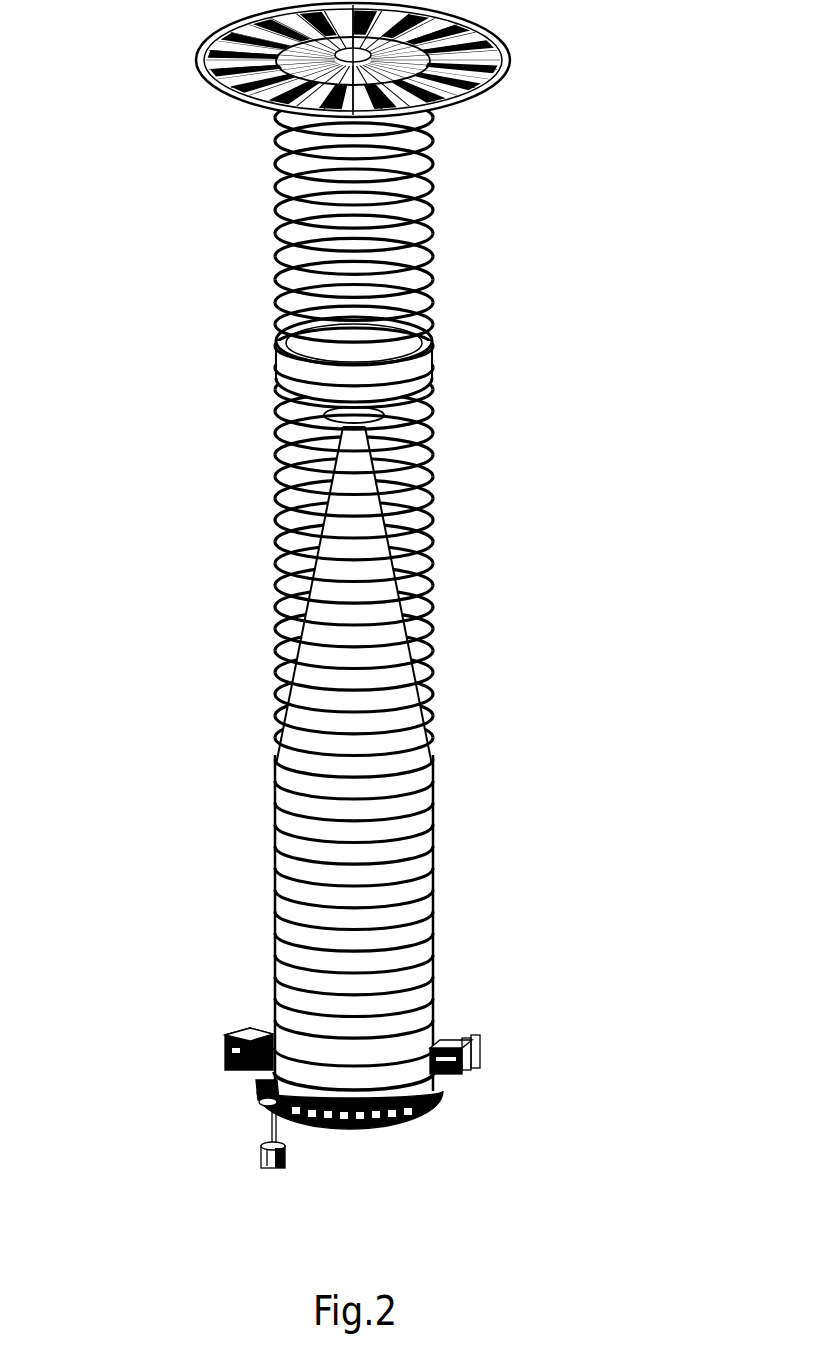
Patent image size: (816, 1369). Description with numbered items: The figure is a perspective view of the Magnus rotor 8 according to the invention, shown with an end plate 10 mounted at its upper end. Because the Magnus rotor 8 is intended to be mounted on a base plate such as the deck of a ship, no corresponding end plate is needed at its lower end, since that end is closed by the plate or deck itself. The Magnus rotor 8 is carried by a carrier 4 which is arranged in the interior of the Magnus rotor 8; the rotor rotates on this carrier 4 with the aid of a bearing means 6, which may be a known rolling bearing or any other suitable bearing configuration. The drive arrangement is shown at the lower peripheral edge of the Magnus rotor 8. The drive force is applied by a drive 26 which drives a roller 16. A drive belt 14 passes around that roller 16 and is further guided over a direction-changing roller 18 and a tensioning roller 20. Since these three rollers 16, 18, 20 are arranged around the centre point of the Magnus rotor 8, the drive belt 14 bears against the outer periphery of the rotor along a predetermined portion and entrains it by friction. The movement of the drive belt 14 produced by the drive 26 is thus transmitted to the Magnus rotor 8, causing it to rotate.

The end plate 10 is at (198, 60).
The Magnus rotor 8 is at (258, 220).
The bearing means 6 is at (420, 390).
The carrier 4 is at (400, 697).
The drive belt 14 is at (253, 1090).
The tensioning roller 20 is at (233, 1032).
The direction-changing roller 18 is at (442, 1032).
The roller 16 is at (262, 1107).
The drive 26 is at (287, 1155).